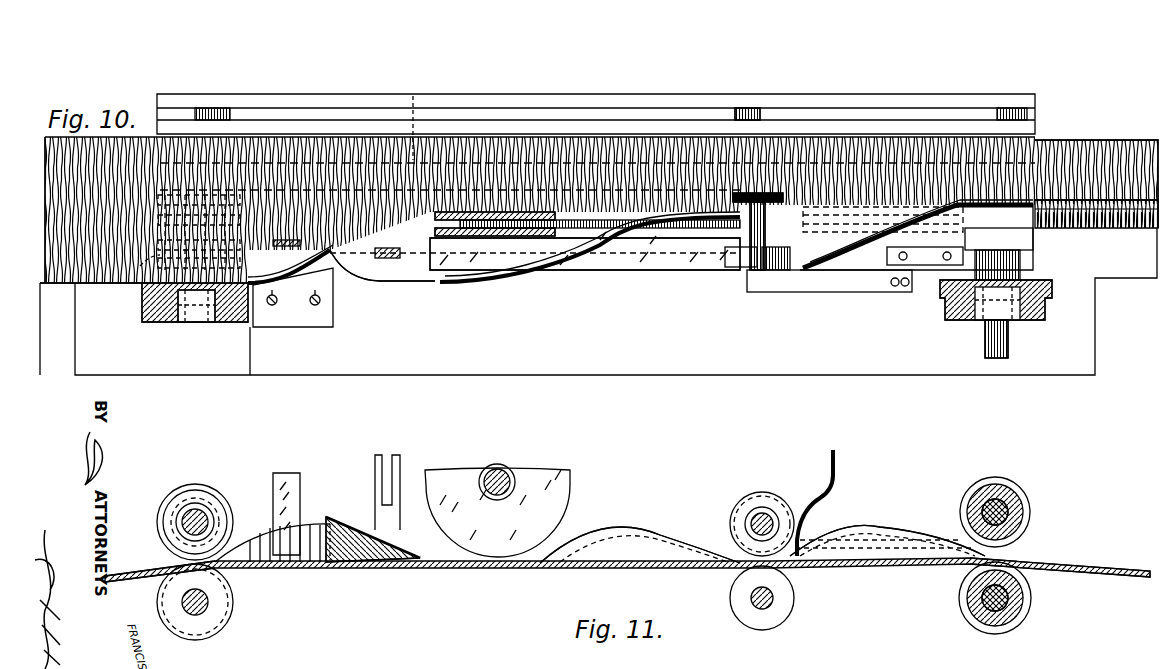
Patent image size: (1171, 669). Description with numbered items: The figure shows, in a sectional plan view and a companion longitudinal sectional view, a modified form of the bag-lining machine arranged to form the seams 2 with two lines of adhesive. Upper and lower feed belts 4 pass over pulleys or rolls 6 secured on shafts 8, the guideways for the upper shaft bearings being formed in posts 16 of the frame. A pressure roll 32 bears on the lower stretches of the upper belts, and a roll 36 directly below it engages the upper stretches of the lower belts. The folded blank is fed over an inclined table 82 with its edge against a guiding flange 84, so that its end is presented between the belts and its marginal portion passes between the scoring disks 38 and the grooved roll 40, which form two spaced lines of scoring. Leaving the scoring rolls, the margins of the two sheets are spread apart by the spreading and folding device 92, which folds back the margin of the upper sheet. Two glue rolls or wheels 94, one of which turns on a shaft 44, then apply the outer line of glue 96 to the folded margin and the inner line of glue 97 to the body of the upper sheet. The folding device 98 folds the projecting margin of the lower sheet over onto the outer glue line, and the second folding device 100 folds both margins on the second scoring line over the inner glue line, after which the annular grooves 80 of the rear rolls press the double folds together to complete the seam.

In FIG. 10, the seam 2 is at (1112, 228).
In FIG. 11, the seam 2 is at (1098, 562).
In FIG. 10, the feed belt 4 is at (409, 116).
In FIG. 10, the pulley or roll 6 is at (197, 108).
In FIG. 10, the shaft 8 is at (198, 322).
In FIG. 11, the shaft 8 is at (195, 508).
In FIG. 10, the post 16 is at (152, 322).
In FIG. 10, the pressure roll 32 is at (760, 200).
In FIG. 11, the pressure roll 32 is at (770, 492).
In FIG. 10, the roll 36 is at (748, 106).
In FIG. 11, the roll 36 is at (785, 615).
In FIG. 11, the scoring disk 38 is at (220, 496).
In FIG. 10, the roll 40 is at (140, 266).
In FIG. 11, the roll 40 is at (233, 618).
In FIG. 11, the shaft 44 is at (495, 476).
In FIG. 10, the annular groove 80 is at (1040, 222).
In FIG. 11, the annular groove 80 is at (1022, 488).
In FIG. 10, the inclined table 82 is at (45, 140).
In FIG. 11, the inclined table 82 is at (118, 580).
In FIG. 10, the guiding flange 84 is at (48, 290).
In FIG. 10, the spreading and folding device 92 is at (380, 272).
In FIG. 11, the spreading and folding device 92 is at (368, 525).
In FIG. 10, the glue roll or wheel 94 is at (447, 218).
In FIG. 11, the glue roll or wheel 94 is at (560, 500).
In FIG. 10, the line of glue 96 is at (594, 236).
In FIG. 10, the inner line of glue 97 is at (620, 226).
In FIG. 10, the folding device 98 is at (679, 278).
In FIG. 11, the folding device 98 is at (660, 534).
In FIG. 10, the second folding device 100 is at (877, 251).
In FIG. 11, the second folding device 100 is at (906, 522).